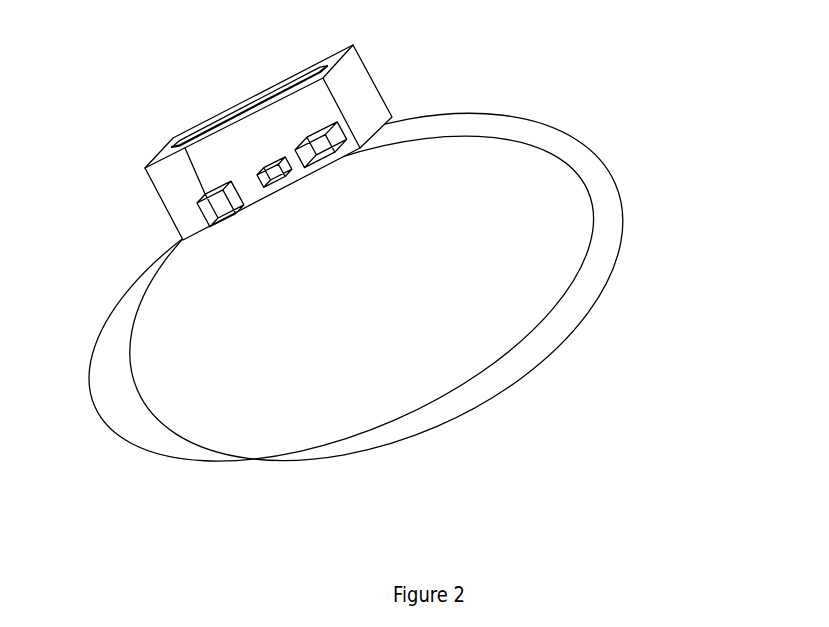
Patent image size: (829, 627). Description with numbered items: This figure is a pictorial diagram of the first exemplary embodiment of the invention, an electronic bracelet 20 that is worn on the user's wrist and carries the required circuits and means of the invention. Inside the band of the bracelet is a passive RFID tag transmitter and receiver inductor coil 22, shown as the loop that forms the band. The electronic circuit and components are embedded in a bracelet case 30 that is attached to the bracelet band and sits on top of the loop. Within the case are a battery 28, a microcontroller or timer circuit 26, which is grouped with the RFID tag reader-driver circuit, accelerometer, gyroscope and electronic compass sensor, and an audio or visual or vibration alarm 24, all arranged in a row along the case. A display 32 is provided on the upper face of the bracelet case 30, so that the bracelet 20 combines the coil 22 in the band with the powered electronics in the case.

The electronic bracelet 20 is at (398, 275).
The passive RFID tag transmitter and receiver inductor coil 22 is at (100, 317).
The audio or visual or vibration alarm 24 is at (215, 228).
The microcontroller or timer circuit 26 is at (283, 189).
The battery 28 is at (333, 158).
The bracelet case 30 is at (308, 164).
The display 32 is at (222, 108).